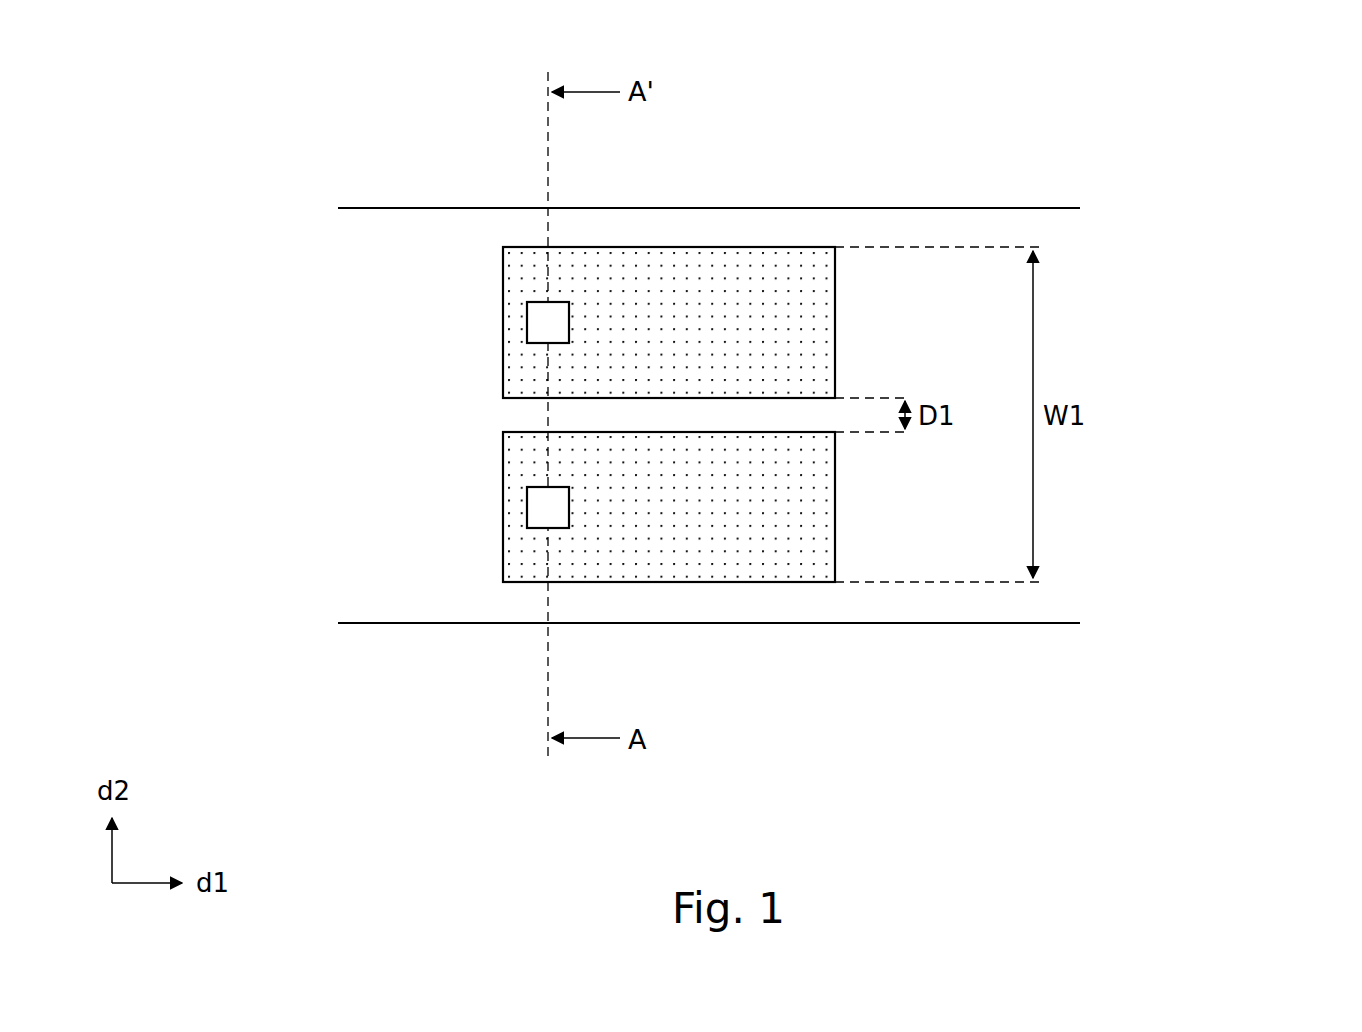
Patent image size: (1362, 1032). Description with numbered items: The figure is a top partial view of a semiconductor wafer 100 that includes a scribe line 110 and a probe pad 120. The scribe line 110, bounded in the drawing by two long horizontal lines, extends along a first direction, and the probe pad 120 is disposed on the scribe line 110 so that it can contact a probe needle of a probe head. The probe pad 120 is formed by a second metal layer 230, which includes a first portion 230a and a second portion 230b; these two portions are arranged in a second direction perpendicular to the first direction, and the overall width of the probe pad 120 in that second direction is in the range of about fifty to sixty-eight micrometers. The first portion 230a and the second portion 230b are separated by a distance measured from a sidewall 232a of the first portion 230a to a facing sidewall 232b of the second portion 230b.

The semiconductor wafer 100 is at (203, 44).
The scribe line 110 is at (346, 289).
The probe pad 120 is at (754, 414).
The second metal layer 230 is at (1270, 64).
The first portion 230a is at (822, 510).
The second portion 230b is at (822, 320).
The sidewall of the first portion 232a is at (667, 432).
The sidewall of the second portion 232b is at (666, 398).